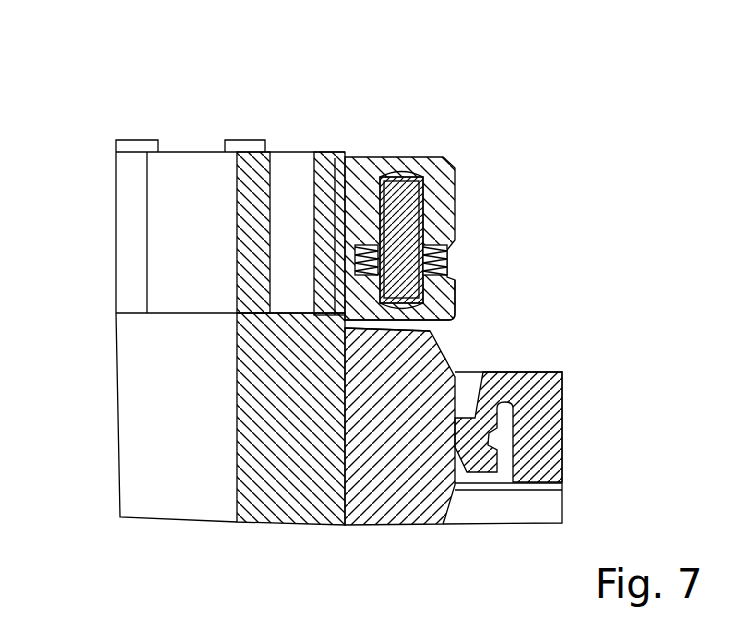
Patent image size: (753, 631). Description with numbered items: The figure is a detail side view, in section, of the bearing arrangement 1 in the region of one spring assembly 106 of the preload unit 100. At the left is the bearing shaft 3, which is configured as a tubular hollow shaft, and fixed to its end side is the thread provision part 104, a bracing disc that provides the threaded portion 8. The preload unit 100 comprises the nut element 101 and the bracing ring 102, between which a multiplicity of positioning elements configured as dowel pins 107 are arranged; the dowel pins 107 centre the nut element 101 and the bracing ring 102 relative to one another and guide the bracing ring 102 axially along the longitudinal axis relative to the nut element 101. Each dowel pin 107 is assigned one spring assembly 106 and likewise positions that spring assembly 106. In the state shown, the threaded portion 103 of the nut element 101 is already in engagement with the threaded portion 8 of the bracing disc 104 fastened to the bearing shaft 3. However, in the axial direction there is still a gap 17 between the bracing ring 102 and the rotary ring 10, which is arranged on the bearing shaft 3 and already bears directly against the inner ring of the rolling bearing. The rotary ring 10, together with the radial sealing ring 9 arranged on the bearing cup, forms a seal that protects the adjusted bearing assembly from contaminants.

The bearing arrangement 1 is at (90, 103).
The bearing shaft 3 is at (270, 390).
The threaded portion 8 is at (332, 182).
The radial sealing ring 9 is at (545, 483).
The rotary ring 10 is at (397, 490).
The gap 17 is at (458, 333).
The preload unit 100 is at (460, 179).
The nut element 101 is at (360, 173).
The bracing ring 102 is at (440, 292).
The threaded portion 103 is at (311, 194).
The thread provision part 104 is at (127, 213).
The spring assembly 106 is at (447, 256).
The dowel pin 107 is at (407, 202).